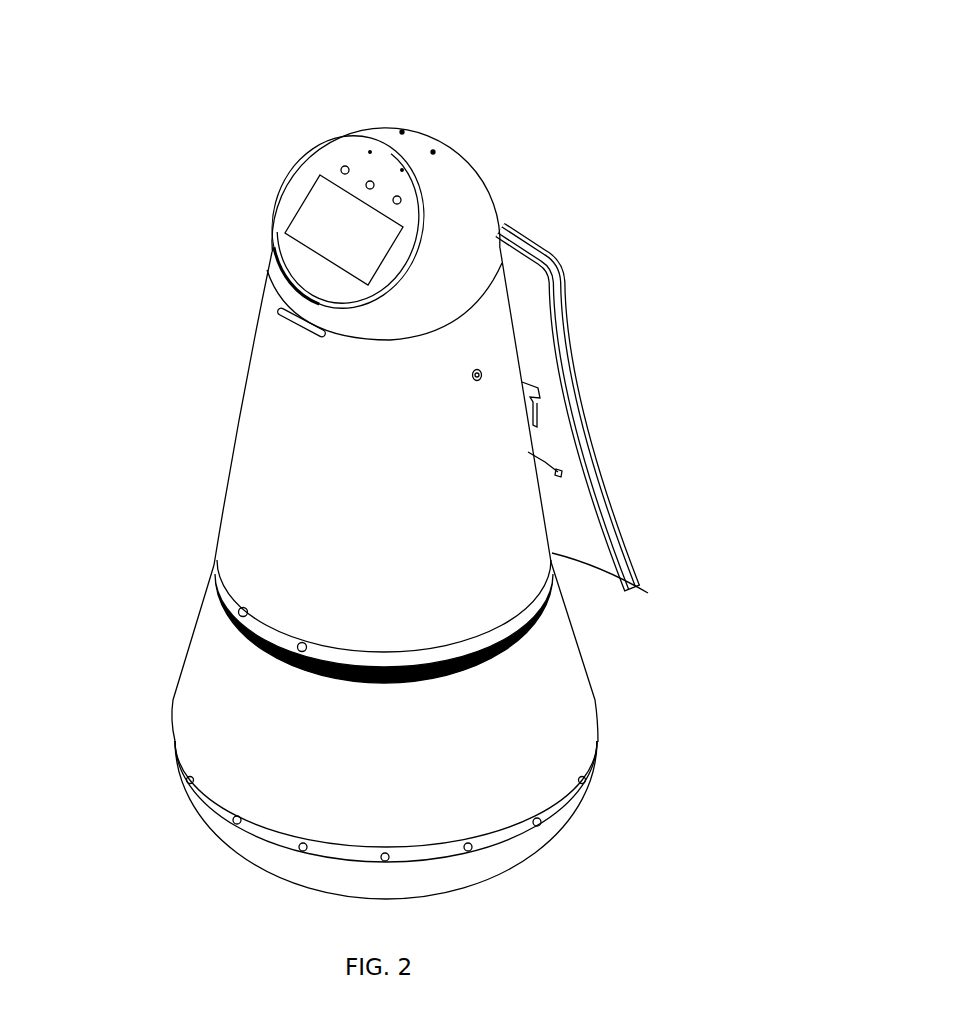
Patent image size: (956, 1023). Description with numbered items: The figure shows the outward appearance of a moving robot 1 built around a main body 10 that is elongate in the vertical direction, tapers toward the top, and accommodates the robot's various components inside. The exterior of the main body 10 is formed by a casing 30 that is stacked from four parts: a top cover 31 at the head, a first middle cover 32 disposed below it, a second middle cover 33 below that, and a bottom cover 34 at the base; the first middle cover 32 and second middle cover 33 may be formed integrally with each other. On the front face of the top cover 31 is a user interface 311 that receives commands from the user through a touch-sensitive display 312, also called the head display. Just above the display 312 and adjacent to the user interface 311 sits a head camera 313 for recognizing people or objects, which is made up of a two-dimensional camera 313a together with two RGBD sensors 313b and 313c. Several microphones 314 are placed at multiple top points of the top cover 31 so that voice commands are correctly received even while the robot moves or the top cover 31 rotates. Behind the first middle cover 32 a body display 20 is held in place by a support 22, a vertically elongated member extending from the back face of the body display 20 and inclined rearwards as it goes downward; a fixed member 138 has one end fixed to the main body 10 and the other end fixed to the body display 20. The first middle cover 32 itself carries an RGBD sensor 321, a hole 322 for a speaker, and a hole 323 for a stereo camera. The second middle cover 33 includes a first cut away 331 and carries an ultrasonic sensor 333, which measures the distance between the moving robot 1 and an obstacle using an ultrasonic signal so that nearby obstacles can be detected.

The moving robot 1 is at (198, 85).
The main body 10 is at (250, 256).
The body display 20 is at (578, 255).
The support 22 is at (567, 374).
The casing 30 is at (97, 355).
The top cover 31 is at (282, 293).
The first middle cover 32 is at (260, 463).
The second middle cover 33 is at (215, 660).
The bottom cover 34 is at (215, 825).
The fixed member 138 is at (535, 437).
The user interface 311 is at (273, 246).
The display 312 is at (305, 208).
The head camera 313 is at (390, 36).
The 2D camera 313a is at (370, 183).
The RGBD sensor 313b is at (342, 168).
The RGBD sensor 313c is at (397, 197).
The microphone 314 is at (402, 132).
The RGBD sensor 321 is at (320, 325).
The hole 322 is at (485, 372).
The hole 323 is at (243, 612).
The first cut away 331 is at (542, 622).
The ultrasonic sensor 333 is at (540, 826).